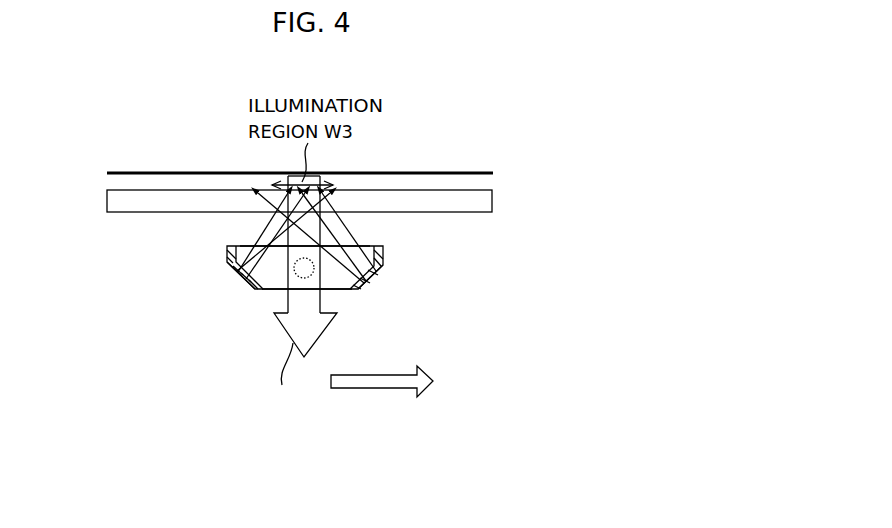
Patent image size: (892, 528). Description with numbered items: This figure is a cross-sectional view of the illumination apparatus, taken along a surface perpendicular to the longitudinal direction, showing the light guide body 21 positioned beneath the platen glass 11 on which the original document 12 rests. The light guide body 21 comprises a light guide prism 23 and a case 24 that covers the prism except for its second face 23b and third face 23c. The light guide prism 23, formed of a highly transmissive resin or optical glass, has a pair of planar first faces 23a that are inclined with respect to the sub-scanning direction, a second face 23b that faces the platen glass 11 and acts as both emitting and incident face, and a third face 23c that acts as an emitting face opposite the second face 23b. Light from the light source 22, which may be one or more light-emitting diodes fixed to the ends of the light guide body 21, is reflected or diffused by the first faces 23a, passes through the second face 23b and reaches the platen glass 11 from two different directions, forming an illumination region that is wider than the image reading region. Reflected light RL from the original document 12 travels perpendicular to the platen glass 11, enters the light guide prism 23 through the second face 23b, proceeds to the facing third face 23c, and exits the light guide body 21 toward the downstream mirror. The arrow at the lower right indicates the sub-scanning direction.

The platen glass 11 is at (478, 200).
The original document 12 is at (444, 172).
The light guide body 21 is at (422, 282).
The light source 22 is at (293, 270).
The light guide prism 23 is at (246, 242).
The first face 23a is at (246, 287).
The second face 23b is at (362, 244).
The third face 23c is at (337, 290).
The case 24 is at (233, 268).